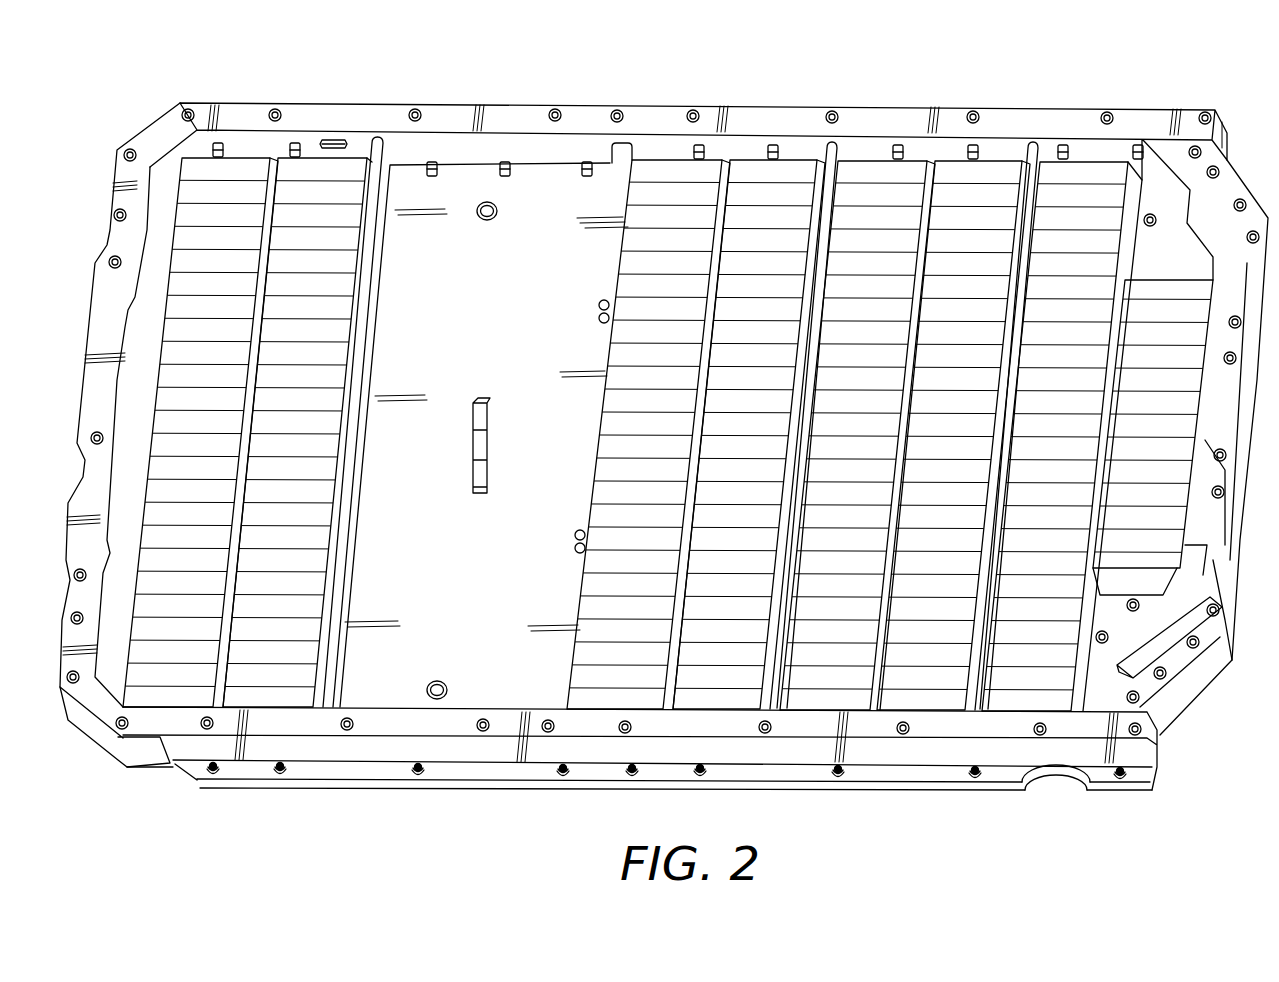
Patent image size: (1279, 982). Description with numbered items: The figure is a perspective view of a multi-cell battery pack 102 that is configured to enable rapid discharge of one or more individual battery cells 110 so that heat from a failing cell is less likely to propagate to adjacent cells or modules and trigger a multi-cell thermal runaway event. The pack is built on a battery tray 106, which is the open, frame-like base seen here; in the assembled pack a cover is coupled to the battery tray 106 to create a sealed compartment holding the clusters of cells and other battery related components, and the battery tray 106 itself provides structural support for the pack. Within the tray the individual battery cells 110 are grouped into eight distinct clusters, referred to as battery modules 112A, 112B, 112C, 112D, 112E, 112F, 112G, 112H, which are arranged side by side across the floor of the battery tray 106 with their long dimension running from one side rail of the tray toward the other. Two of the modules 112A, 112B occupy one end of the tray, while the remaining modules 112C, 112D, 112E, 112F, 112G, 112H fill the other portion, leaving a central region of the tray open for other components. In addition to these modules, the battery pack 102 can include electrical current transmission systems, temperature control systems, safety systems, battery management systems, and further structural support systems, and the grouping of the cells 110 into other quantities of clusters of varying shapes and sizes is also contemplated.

The battery pack 102 is at (778, 84).
The battery tray 106 is at (482, 709).
The battery cells 110 is at (313, 217).
The battery module 112A is at (238, 433).
The battery module 112B is at (332, 433).
The battery module 112C is at (690, 433).
The battery module 112D is at (785, 433).
The battery module 112E is at (895, 433).
The battery module 112F is at (987, 433).
The battery module 112G is at (1097, 433).
The battery module 112H is at (1118, 433).